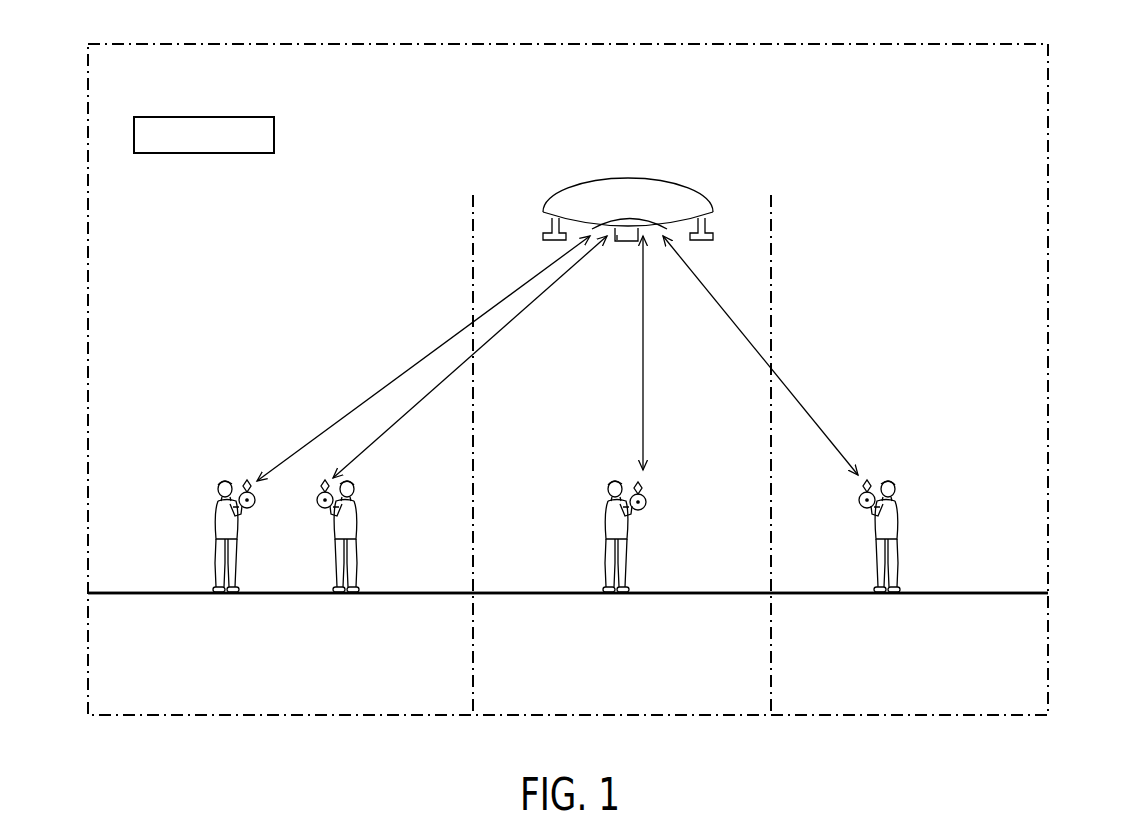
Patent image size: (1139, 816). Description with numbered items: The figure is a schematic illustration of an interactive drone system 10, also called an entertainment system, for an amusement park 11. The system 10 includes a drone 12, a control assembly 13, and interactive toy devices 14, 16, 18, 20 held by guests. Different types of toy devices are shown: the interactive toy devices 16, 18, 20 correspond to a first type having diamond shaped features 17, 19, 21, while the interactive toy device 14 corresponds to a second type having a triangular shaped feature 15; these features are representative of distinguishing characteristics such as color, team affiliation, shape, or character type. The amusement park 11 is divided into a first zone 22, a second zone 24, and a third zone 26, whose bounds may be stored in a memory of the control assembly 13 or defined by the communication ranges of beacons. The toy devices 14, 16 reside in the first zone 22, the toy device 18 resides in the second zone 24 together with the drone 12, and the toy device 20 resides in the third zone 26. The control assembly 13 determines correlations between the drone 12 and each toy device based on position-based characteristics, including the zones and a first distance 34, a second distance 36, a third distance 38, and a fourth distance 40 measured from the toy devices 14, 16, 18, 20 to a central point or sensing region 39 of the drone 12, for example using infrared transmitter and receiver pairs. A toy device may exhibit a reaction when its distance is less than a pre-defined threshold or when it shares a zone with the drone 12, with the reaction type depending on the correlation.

The interactive drone system 10 is at (1008, 194).
The amusement park 11 is at (570, 44).
The drone 12 is at (630, 178).
The control assembly 13 is at (205, 117).
The interactive toy device 14 is at (258, 505).
The triangular shaped feature 15 is at (246, 482).
The interactive toy device 16 is at (316, 496).
The diamond shaped feature 17 is at (323, 482).
The interactive toy device 18 is at (650, 497).
The diamond shaped feature 19 is at (636, 484).
The interactive toy device 20 is at (856, 492).
The diamond shaped feature 21 is at (869, 482).
The first zone 22 is at (255, 683).
The second zone 24 is at (636, 682).
The third zone 26 is at (875, 682).
The first distance 34 is at (424, 357).
The second distance 36 is at (427, 393).
The third distance 38 is at (641, 356).
The central point or region 39 is at (617, 236).
The fourth distance 40 is at (797, 398).